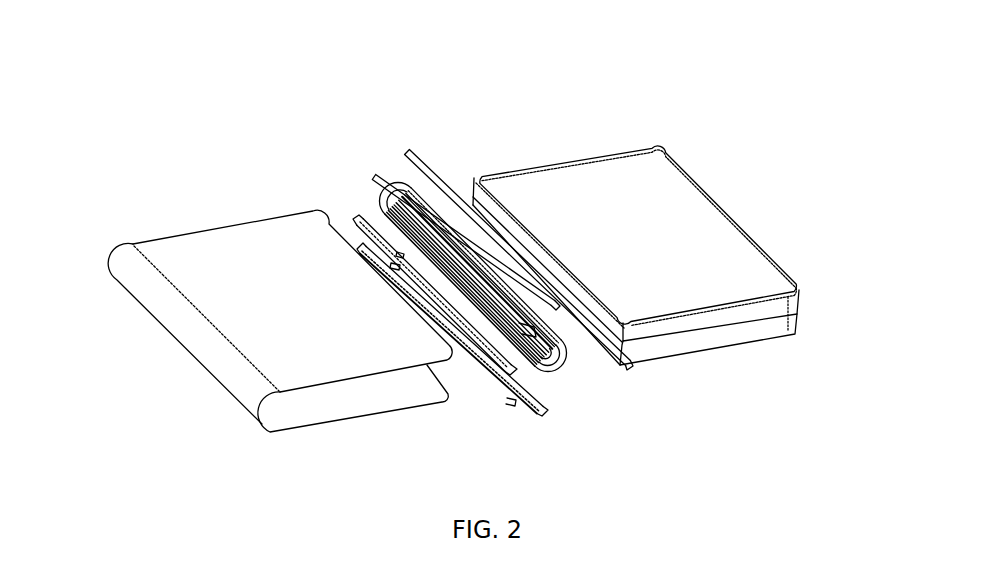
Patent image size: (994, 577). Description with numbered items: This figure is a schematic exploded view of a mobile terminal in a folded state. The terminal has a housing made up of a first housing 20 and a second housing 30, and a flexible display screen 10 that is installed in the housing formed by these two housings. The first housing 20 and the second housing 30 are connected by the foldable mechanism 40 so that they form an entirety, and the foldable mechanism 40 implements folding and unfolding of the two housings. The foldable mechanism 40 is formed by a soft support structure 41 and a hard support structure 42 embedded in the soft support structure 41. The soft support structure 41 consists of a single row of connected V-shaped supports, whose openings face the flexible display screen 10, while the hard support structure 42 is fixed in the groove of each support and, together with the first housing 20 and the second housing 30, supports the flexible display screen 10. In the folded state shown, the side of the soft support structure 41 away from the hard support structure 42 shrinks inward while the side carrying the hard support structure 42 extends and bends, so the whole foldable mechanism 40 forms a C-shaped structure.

The flexible display screen 10 is at (200, 289).
The first housing 20 is at (682, 215).
The second housing 30 is at (730, 343).
The foldable mechanism 40 is at (564, 251).
The soft support structure 41 is at (550, 368).
The hard support structure 42 is at (515, 405).